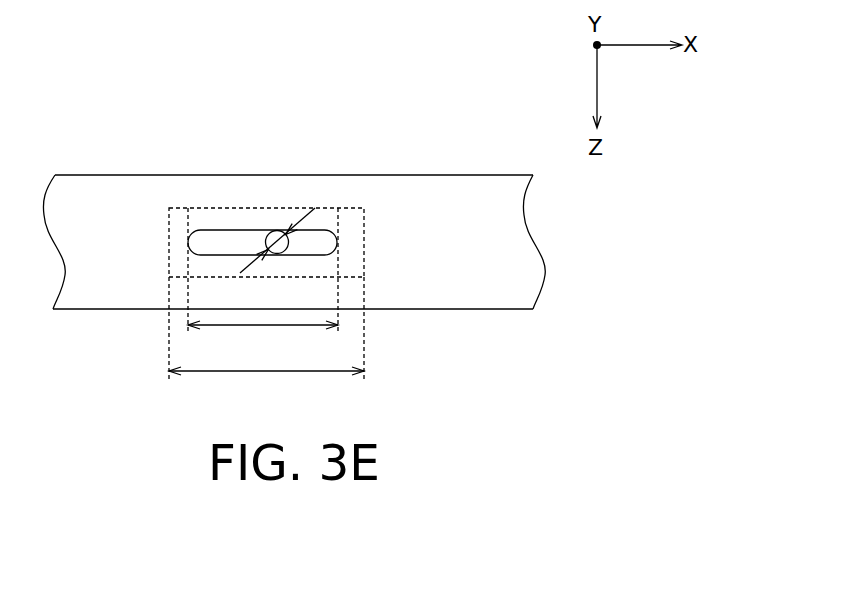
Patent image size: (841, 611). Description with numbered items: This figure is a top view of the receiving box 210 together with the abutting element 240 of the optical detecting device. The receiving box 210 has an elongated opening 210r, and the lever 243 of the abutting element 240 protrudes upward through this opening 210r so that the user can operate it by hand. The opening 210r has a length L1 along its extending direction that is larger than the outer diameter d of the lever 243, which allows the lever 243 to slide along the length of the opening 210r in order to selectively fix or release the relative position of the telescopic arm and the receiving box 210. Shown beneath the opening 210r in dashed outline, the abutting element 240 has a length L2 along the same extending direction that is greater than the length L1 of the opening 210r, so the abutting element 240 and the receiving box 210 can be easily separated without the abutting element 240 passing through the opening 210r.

The receiving box 210 is at (417, 208).
The opening 210r is at (220, 242).
The abutting element 240 is at (343, 208).
The lever 243 is at (276, 230).
The outer diameter of the lever d is at (288, 243).
The length of the opening L1 is at (263, 339).
The length of the abutting element L2 is at (266, 385).